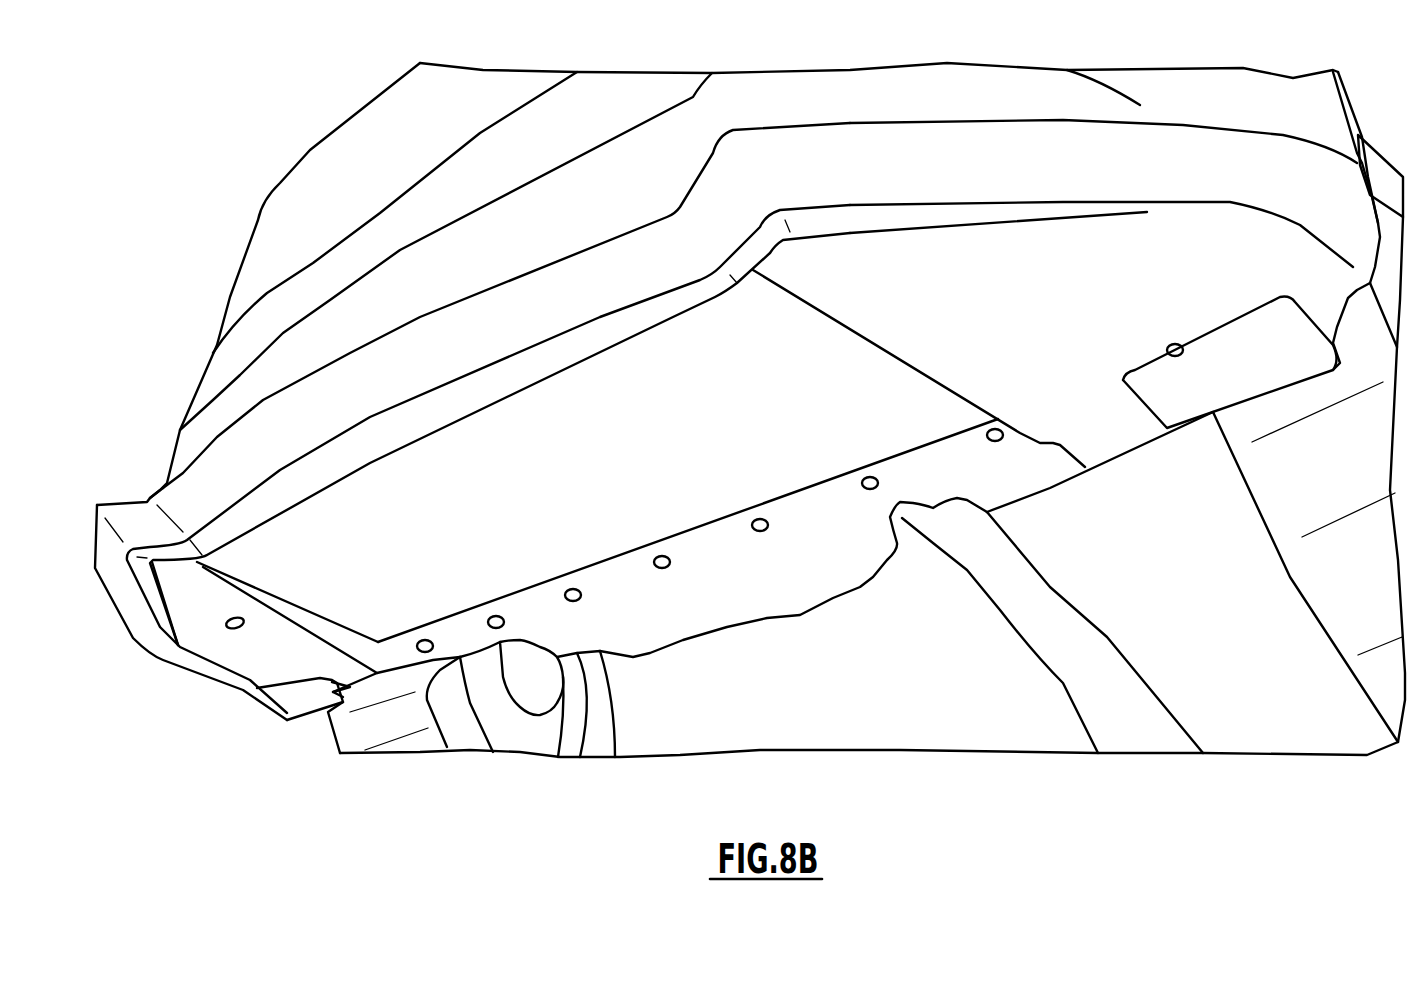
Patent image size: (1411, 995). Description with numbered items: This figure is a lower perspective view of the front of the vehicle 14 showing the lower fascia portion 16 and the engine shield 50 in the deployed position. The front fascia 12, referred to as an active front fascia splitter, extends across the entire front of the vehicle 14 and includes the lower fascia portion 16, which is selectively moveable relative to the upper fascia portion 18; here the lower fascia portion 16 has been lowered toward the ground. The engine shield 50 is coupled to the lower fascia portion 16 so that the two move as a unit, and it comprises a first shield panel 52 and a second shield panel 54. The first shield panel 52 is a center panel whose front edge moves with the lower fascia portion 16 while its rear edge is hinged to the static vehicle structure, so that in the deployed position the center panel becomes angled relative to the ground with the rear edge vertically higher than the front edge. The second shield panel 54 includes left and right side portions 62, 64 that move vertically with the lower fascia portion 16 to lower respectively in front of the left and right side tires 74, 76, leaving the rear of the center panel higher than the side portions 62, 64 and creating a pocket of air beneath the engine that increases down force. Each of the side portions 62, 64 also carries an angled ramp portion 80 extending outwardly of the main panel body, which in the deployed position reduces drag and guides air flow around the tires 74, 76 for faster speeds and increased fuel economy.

The front fascia 12 is at (300, 147).
The vehicle 14 is at (728, 88).
The lower fascia portion 16 is at (187, 505).
The upper fascia portion 18 is at (217, 370).
The engine shield 50 is at (1032, 263).
The first shield panel 52 is at (400, 572).
The second shield panel 54 is at (213, 647).
The left side portion 62 is at (1138, 260).
The right side portion 64 is at (258, 650).
The left side tire 74 is at (1342, 565).
The right side tire 76 is at (360, 733).
The angled ramp portion 80 is at (302, 707).